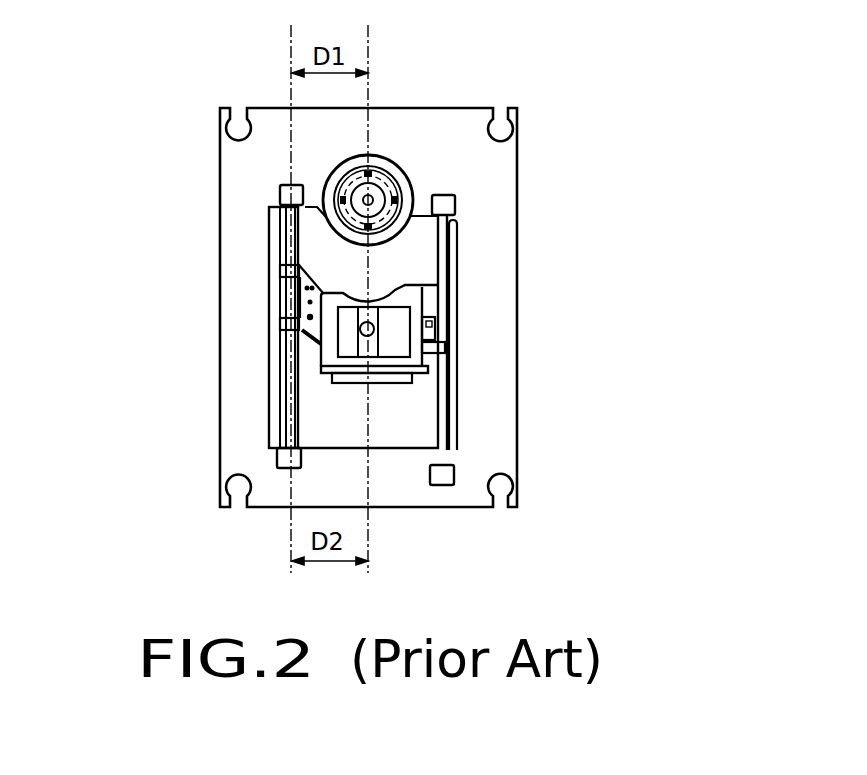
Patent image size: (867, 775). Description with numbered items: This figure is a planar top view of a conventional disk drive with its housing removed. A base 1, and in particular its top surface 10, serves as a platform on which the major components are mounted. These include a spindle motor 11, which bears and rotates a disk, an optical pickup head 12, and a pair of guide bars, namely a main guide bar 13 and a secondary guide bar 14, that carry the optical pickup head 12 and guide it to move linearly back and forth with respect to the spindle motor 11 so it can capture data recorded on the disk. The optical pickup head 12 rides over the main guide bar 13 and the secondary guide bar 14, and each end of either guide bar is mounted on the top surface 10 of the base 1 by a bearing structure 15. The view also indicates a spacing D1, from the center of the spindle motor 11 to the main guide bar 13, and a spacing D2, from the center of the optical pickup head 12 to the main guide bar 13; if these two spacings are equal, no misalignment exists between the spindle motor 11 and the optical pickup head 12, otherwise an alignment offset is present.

The base 1 is at (487, 295).
The top surface 10 is at (479, 164).
The spindle motor 11 is at (380, 196).
The optical pickup head 12 is at (397, 327).
The main guide bar 13 is at (285, 353).
The secondary guide bar 14 is at (442, 390).
The bearing structure 15 is at (280, 187).